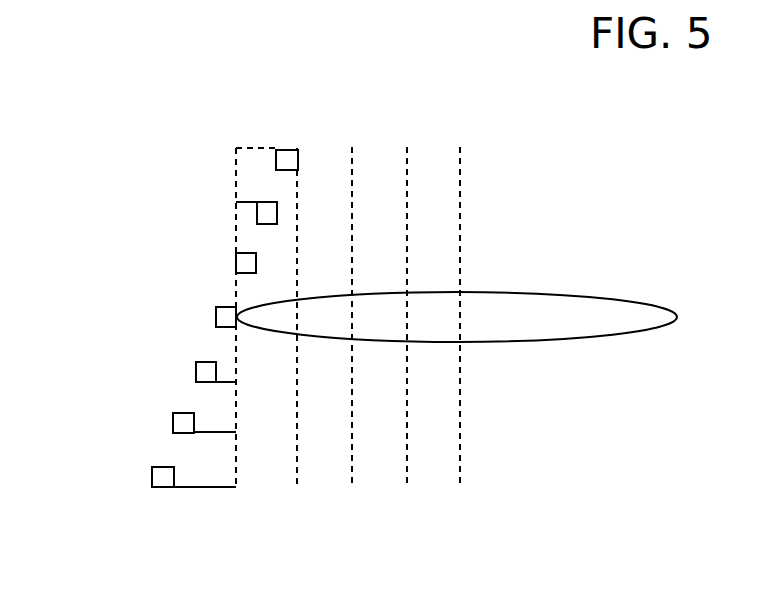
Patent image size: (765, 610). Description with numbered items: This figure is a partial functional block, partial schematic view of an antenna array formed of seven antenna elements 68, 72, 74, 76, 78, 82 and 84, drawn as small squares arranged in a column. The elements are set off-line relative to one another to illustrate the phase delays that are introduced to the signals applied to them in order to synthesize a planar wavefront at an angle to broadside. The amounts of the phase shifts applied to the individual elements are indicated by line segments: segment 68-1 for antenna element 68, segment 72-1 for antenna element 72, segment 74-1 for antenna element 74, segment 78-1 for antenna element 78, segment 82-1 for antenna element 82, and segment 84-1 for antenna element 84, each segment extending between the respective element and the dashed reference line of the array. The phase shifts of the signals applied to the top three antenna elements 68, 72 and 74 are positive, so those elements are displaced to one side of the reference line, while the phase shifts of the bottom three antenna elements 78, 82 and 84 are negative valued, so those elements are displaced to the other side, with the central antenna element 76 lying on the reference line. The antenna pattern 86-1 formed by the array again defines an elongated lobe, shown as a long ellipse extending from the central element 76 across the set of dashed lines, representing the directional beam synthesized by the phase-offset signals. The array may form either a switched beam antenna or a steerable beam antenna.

The antenna element 68 is at (292, 148).
The line segment 68-1 is at (257, 148).
The antenna element 72 is at (277, 214).
The line segment 72-1 is at (258, 202).
The antenna element 74 is at (256, 267).
The line segment 74-1 is at (236, 255).
The antenna element 76 is at (216, 318).
The antenna element 78 is at (196, 365).
The line segment 78-1 is at (215, 383).
The antenna element 82 is at (173, 423).
The line segment 82-1 is at (193, 434).
The antenna element 84 is at (152, 482).
The line segment 84-1 is at (205, 487).
The antenna pattern 86-1 is at (543, 293).